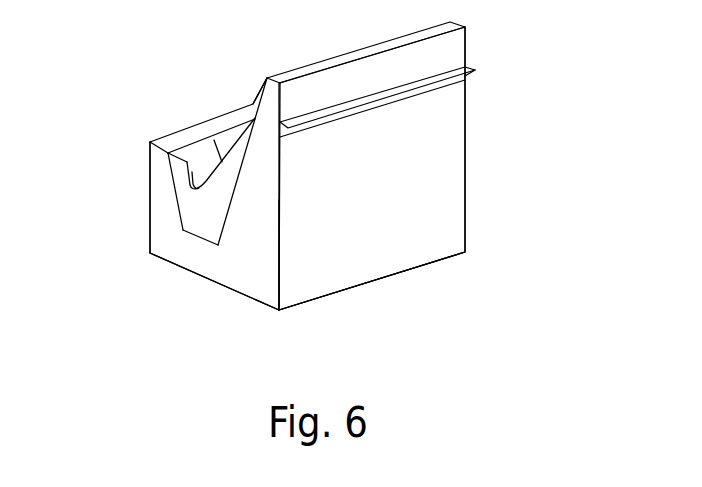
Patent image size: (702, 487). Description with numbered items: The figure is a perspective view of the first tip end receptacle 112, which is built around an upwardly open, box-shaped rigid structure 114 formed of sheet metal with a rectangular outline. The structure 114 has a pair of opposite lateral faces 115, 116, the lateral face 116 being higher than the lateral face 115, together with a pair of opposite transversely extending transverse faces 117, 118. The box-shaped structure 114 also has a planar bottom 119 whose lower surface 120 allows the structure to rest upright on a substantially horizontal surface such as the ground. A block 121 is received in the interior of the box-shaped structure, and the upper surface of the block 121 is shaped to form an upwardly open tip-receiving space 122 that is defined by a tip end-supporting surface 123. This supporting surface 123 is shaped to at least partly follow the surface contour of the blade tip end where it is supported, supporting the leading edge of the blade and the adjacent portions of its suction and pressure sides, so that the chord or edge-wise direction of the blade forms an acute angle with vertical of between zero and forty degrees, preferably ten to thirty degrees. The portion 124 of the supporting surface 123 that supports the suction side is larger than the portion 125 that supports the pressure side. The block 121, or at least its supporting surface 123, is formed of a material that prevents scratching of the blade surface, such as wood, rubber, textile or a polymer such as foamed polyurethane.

The first tip end receptacle 112 is at (502, 253).
The box-shaped rigid structure 114 is at (433, 205).
The lateral face 115 is at (147, 180).
The lateral face 116 is at (440, 122).
The transverse face 117 is at (233, 282).
The transverse face 118 is at (465, 140).
The planar bottom 119 is at (378, 277).
The lower surface 120 is at (328, 295).
The block 121 is at (203, 227).
The tip-receiving space 122 is at (217, 157).
The tip end-supporting surface 123 is at (195, 185).
The portion of the supporting surface supporting the suction side 124 is at (229, 152).
The portion of the supporting surface supporting the pressure side 125 is at (193, 155).